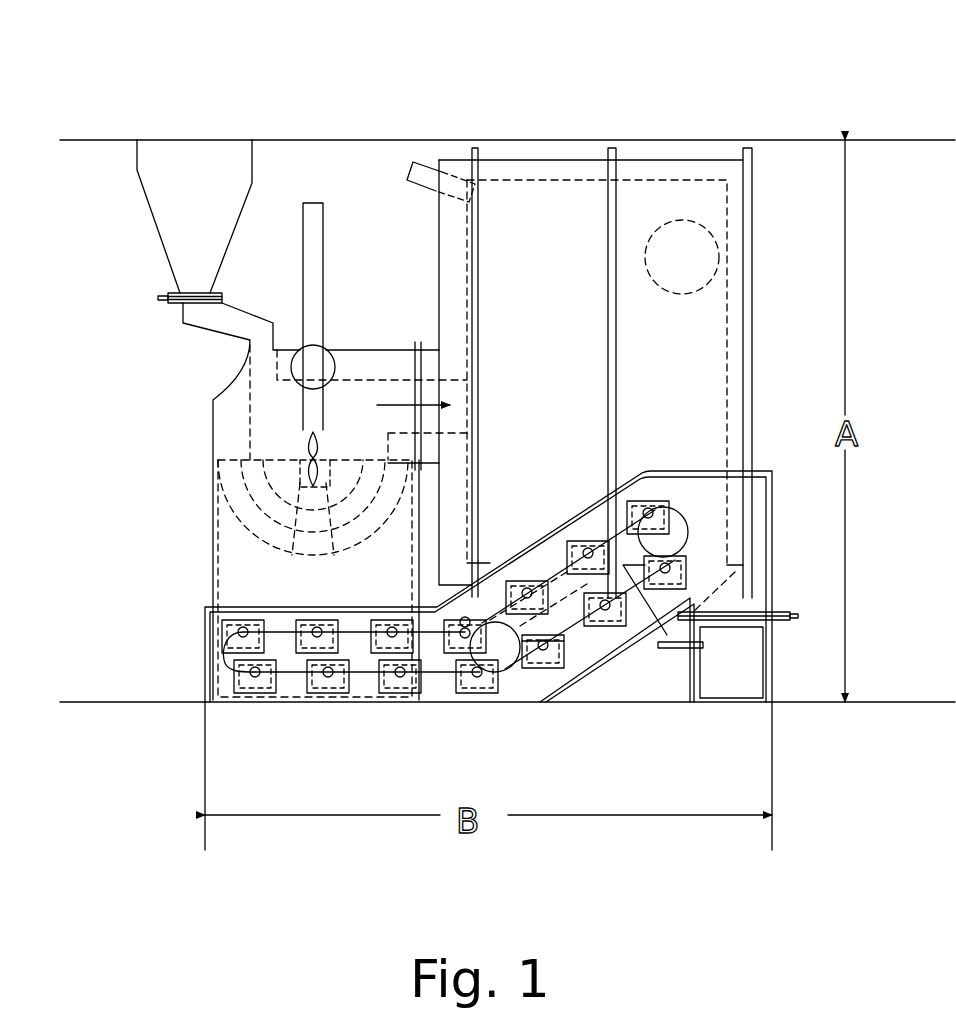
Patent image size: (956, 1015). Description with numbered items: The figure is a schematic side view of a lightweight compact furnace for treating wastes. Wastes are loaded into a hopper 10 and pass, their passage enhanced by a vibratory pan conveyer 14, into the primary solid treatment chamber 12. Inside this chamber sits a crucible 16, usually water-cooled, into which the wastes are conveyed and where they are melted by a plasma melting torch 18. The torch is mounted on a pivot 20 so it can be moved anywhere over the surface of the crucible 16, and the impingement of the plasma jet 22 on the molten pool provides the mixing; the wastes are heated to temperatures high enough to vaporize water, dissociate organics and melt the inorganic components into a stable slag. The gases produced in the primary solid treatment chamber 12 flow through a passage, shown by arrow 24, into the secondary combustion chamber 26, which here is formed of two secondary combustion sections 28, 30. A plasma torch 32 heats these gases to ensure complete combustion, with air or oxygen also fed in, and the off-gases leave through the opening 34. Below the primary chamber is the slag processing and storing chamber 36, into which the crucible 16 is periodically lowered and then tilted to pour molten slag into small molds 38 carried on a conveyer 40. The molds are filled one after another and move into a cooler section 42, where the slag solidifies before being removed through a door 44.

The hopper 10 is at (148, 163).
The primary solid treatment chamber 12 is at (214, 379).
The vibratory pan conveyer 14 is at (168, 297).
The crucible 16 is at (257, 517).
The plasma melting torch 18 is at (315, 415).
The pivot 20 is at (313, 362).
The plasma jet 22 is at (322, 455).
The arrow 24 is at (393, 405).
The secondary combustion chamber 26 is at (546, 150).
The secondary combustion section 28 is at (513, 202).
The secondary combustion section 30 is at (652, 195).
The plasma torch 32 is at (420, 165).
The opening 34 is at (702, 258).
The slag processing and storing chamber 36 is at (198, 650).
The molds 38 is at (480, 688).
The conveyer 40 is at (557, 573).
The cooler section 42 is at (694, 505).
The door 44 is at (737, 677).